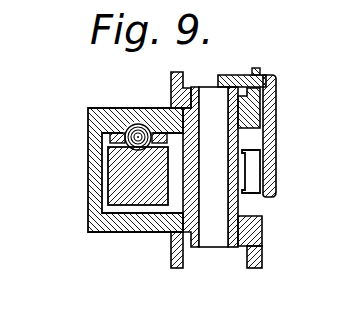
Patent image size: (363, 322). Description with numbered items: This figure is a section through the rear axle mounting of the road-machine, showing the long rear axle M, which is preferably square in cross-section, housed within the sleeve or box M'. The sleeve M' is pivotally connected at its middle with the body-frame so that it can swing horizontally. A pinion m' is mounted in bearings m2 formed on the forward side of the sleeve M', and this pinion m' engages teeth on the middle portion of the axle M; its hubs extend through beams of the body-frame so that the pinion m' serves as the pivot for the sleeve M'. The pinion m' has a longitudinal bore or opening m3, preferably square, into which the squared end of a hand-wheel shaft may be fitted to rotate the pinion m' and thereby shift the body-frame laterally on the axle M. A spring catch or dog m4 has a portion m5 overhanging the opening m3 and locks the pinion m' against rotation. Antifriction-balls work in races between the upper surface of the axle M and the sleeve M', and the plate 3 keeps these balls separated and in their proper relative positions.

The sleeve or box M' is at (119, 144).
The pinion m' is at (154, 175).
The plate 3 is at (88, 139).
The rear axle M is at (92, 184).
The longitudinal bore or opening m3 is at (217, 204).
The overhanging portion of spring catch m5 is at (223, 77).
The bearings m2 is at (262, 115).
The spring catch or dog m4 is at (257, 173).